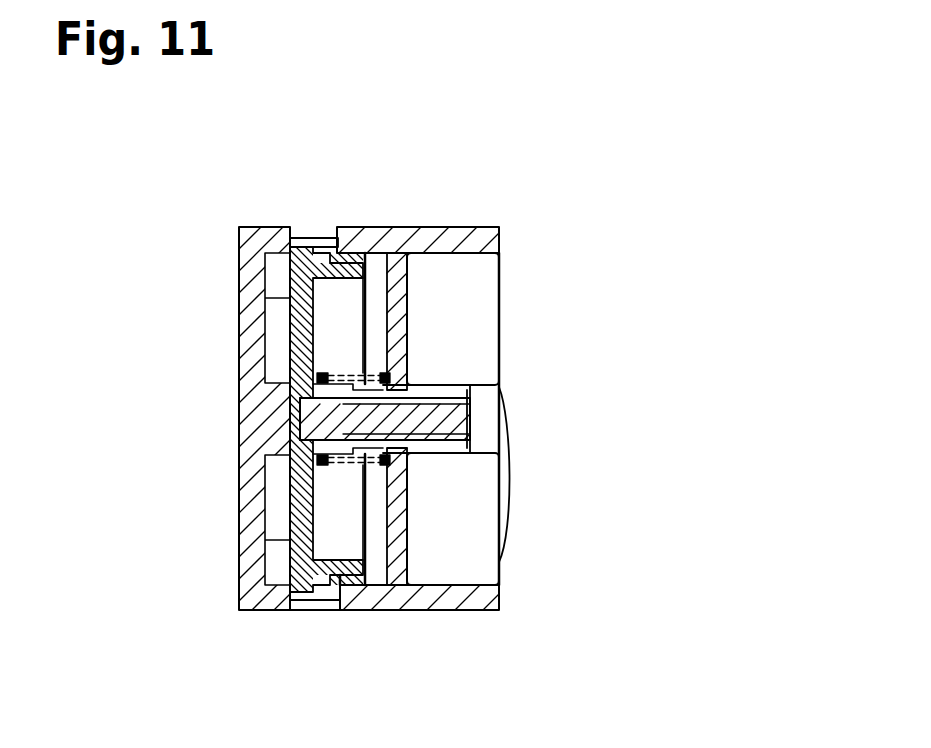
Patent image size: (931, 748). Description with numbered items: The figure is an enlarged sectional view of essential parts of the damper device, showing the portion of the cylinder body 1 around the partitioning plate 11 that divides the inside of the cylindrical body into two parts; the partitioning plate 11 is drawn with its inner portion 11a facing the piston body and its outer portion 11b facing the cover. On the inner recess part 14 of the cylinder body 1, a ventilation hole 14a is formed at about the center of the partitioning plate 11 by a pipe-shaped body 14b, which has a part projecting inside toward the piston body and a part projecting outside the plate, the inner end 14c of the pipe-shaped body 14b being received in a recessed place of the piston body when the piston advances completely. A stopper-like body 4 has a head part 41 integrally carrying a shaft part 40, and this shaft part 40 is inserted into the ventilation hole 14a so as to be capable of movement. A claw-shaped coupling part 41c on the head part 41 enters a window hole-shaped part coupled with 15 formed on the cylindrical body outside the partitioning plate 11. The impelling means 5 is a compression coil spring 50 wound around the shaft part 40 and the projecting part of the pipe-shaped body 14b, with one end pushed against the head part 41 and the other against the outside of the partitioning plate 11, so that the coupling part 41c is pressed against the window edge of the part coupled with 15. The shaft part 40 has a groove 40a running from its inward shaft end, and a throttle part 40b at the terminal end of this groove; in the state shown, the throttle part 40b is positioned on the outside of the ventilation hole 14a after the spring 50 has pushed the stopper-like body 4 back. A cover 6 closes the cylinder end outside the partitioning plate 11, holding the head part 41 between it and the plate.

The cylinder body 1 is at (462, 227).
The stopper-like body 4 is at (292, 335).
The impelling means 5 is at (374, 468).
The compression coil spring 50 is at (353, 378).
The cover 6 is at (239, 265).
The partitioning plate 11 is at (410, 557).
The inner surface of hub 11a is at (408, 287).
The bore of hub 11b is at (390, 300).
The inner recess part 14 is at (507, 527).
The ventilation hole 14a is at (452, 457).
The pipe-shaped body 14b is at (471, 383).
The inner end of the pipe-shaped body 14c is at (443, 387).
The part coupled with 15 is at (327, 238).
The shaft part 40 is at (471, 420).
The groove 40a is at (430, 387).
The throttle part 40b is at (300, 396).
The head part 41 is at (292, 503).
The coupling part 41c is at (302, 238).